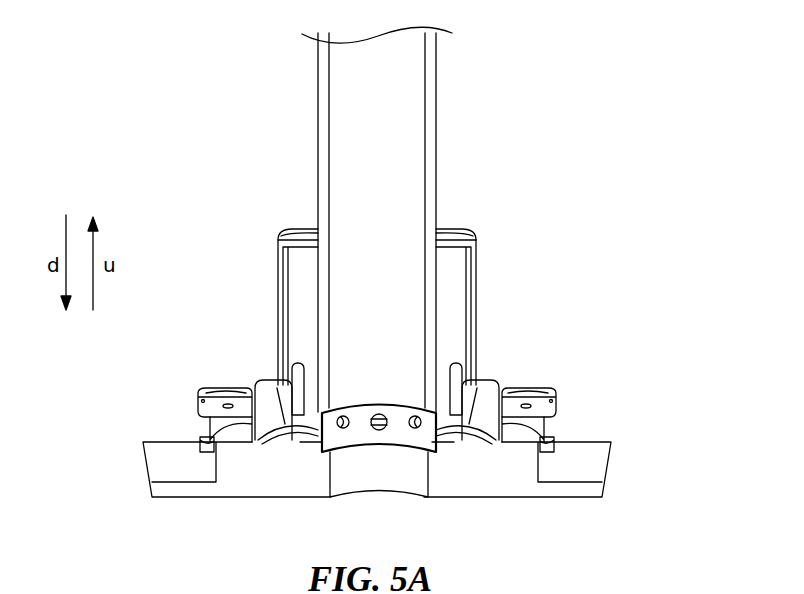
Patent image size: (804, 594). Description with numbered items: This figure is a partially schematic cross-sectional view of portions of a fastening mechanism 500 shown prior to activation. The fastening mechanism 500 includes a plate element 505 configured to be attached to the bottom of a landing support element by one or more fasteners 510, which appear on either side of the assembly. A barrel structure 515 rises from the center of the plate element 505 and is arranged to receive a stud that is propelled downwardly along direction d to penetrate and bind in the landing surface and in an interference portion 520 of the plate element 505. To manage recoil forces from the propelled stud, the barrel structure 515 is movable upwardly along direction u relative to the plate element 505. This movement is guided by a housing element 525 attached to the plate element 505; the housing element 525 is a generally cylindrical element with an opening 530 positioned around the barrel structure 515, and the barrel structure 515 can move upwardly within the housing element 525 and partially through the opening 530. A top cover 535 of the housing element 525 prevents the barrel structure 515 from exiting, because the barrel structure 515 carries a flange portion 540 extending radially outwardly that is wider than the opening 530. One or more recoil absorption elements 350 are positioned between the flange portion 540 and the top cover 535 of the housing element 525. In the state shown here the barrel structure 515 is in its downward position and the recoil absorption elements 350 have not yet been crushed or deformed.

The fastening mechanism 500 is at (409, 285).
The barrel structure 515 is at (326, 100).
The recoil absorption elements 350 is at (302, 304).
The opening 530 is at (320, 232).
The top cover 535 is at (452, 231).
The housing element 525 is at (476, 262).
The flange portion 540 is at (298, 357).
The fasteners 510 is at (204, 388).
The plate element 505 is at (261, 472).
The interference portion 520 is at (385, 477).